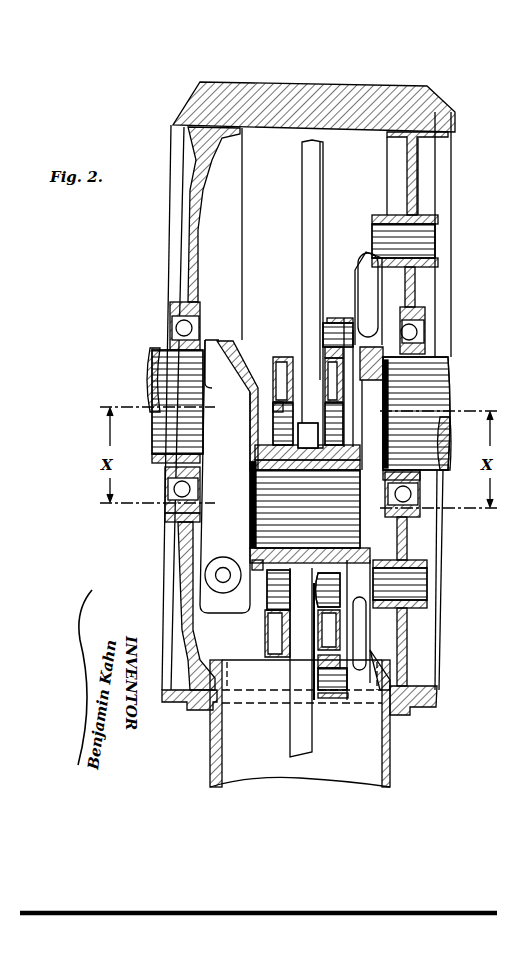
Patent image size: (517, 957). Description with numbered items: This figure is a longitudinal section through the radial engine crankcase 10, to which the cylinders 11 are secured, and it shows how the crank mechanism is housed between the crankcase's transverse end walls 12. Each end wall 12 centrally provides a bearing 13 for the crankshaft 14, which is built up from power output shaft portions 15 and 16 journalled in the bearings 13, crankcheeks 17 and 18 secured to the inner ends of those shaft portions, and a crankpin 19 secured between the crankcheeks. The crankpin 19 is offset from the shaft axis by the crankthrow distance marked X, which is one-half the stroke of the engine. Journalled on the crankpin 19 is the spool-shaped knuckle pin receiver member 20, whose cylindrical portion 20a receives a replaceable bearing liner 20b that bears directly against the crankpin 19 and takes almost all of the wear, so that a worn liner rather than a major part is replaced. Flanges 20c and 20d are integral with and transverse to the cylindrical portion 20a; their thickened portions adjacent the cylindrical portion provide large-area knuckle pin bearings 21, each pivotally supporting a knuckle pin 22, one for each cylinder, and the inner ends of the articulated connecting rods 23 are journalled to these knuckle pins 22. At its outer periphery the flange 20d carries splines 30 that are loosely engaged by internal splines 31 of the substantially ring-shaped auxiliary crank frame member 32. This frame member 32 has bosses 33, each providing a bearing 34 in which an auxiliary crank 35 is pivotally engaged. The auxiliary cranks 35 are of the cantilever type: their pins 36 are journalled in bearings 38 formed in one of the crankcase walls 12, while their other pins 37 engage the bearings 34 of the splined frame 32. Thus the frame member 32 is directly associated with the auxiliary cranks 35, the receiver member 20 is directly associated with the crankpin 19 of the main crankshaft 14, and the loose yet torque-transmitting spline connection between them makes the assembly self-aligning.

The radial engine crankcase 10 is at (440, 546).
The cylinders 11 is at (388, 748).
The transverse end walls 12 is at (190, 224).
The bearings 13 is at (172, 318).
The crankshaft 14 is at (158, 350).
The power output shaft portion 15 is at (172, 384).
The power output shaft portion 16 is at (428, 386).
The crankcheek 17 is at (207, 528).
The crankcheek 18 is at (372, 412).
The crankpin 19 is at (310, 511).
The knuckle pin receiver member 20 is at (285, 358).
The cylindrical portion 20a is at (254, 562).
The bearing liner 20b is at (254, 524).
The flange 20c is at (283, 638).
The flange 20d is at (350, 645).
The knuckle pin bearings 21 is at (272, 412).
The knuckle pin 22 is at (282, 430).
The articulated connecting rods 23 is at (308, 228).
The splines 30 is at (313, 657).
The splines 31 is at (335, 378).
The auxiliary crank frame member 32 is at (345, 660).
The bosses 33 is at (340, 318).
The bearing 34 is at (338, 332).
The auxiliary cranks 35 is at (360, 270).
The pins 36 is at (428, 240).
The pins 37 is at (322, 351).
The bearings 38 is at (396, 215).